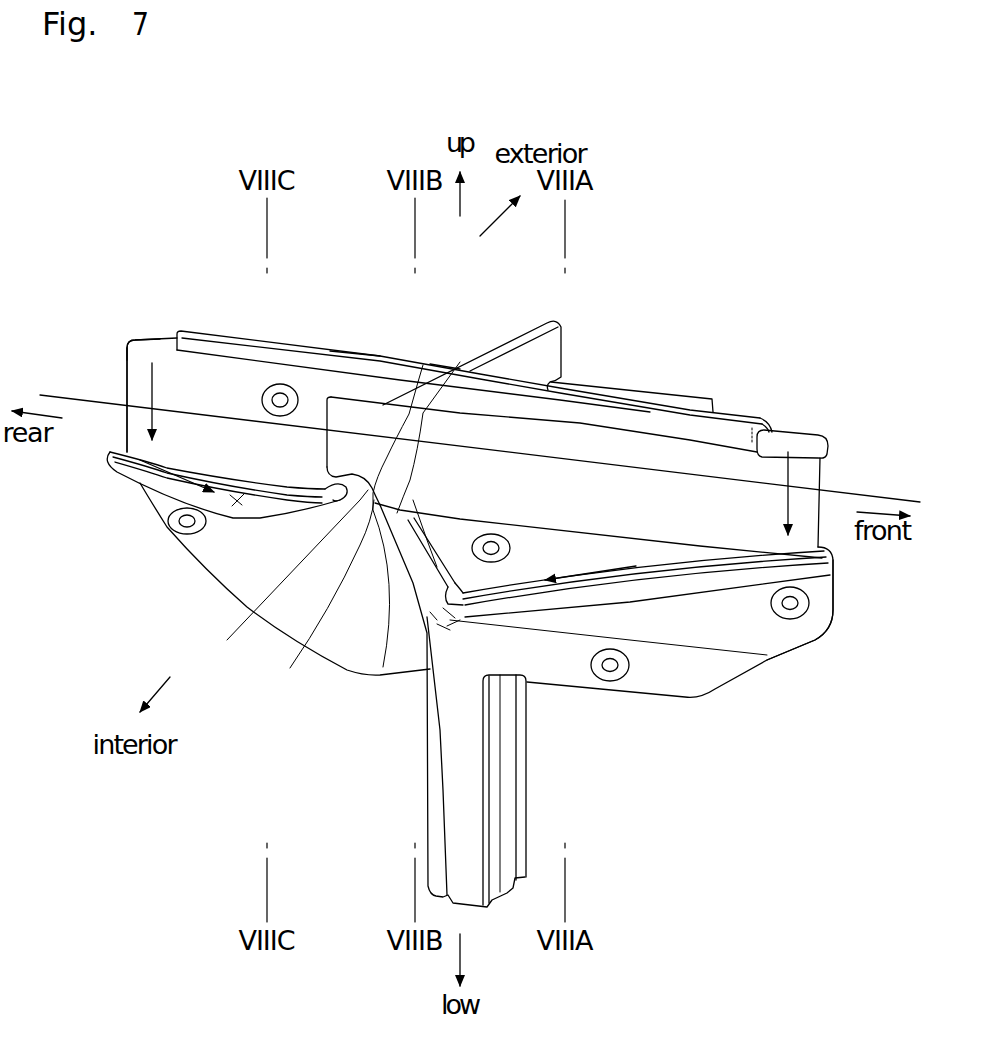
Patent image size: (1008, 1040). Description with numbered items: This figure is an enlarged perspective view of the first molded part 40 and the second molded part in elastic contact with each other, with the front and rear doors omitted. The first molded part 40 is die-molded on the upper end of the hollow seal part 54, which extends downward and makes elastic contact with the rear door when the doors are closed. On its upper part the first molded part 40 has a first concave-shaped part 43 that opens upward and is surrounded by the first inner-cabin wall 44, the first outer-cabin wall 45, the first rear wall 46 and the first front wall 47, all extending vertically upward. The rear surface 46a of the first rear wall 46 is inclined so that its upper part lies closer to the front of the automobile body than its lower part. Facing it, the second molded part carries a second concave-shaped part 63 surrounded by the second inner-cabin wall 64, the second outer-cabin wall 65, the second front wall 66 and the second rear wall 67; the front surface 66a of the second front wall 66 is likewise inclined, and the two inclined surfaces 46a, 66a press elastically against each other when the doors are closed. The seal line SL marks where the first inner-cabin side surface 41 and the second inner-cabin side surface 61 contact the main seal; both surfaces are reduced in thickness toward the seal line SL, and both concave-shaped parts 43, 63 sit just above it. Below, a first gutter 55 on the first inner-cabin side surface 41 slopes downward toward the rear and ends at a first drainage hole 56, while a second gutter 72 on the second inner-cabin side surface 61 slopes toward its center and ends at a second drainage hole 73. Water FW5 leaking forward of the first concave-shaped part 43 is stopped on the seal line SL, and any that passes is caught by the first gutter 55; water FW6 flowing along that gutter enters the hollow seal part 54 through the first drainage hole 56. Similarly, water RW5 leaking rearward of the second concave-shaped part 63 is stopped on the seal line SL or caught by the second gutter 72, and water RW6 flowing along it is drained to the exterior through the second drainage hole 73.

The first molded part 40 is at (758, 376).
The first inner-cabin side surface 41 is at (700, 540).
The first concave-shaped part 43 is at (764, 406).
The first inner-cabin wall 44 is at (722, 423).
The first outer-cabin wall 45 is at (633, 392).
The first rear wall 46 is at (453, 539).
The rear surface 46a is at (284, 579).
The first front wall 47 is at (776, 430).
The hollow seal part 54 is at (452, 779).
The first gutter 55 is at (655, 597).
The first drainage hole 56 is at (430, 632).
The second inner-cabin side surface 61 is at (212, 400).
The second concave-shaped part 63 is at (349, 352).
The second inner-cabin wall 64 is at (283, 350).
The second outer-cabin wall 65 is at (215, 332).
The second front wall 66 is at (456, 358).
The front surface 66a is at (468, 356).
The second rear wall 67 is at (158, 336).
The second gutter 72 is at (123, 485).
The second drainage hole 73 is at (243, 517).
The seal line SL is at (892, 488).
The water RW5 is at (143, 382).
The water RW6 is at (172, 492).
The water FW5 is at (793, 514).
The water FW6 is at (567, 600).